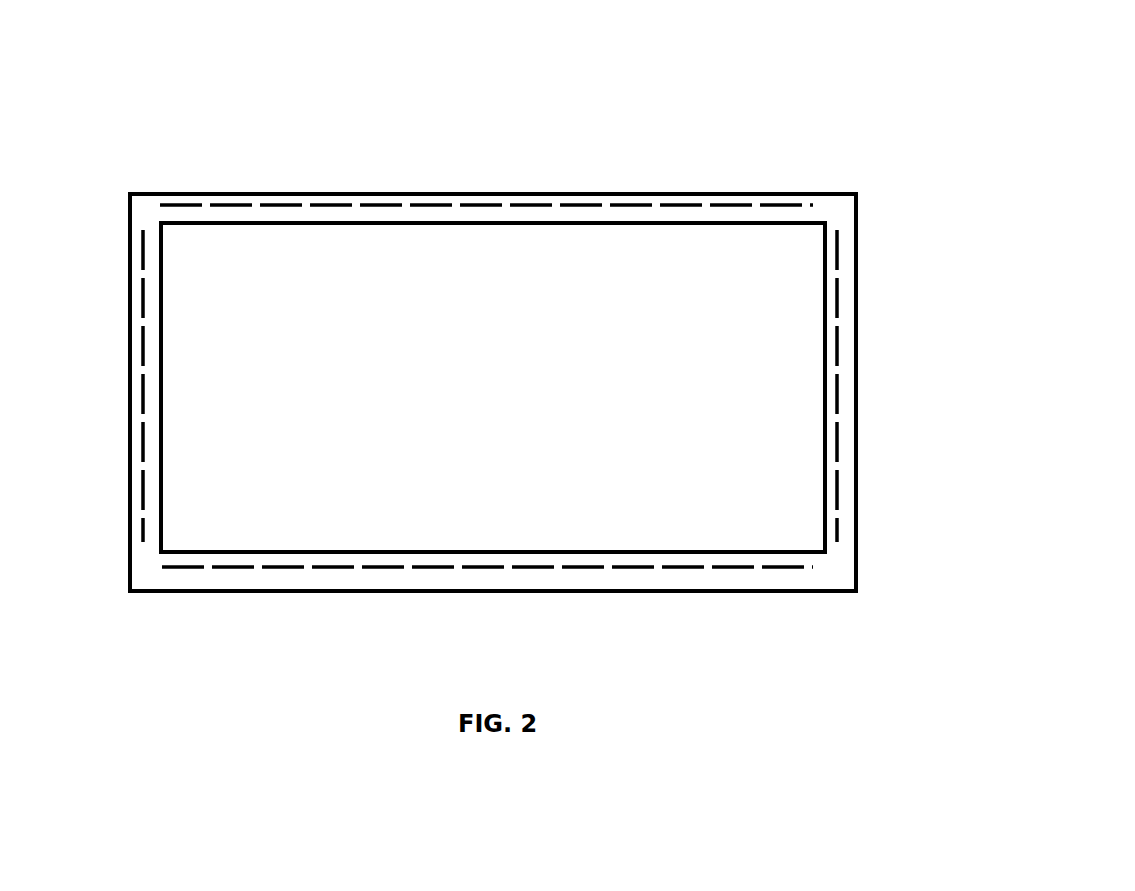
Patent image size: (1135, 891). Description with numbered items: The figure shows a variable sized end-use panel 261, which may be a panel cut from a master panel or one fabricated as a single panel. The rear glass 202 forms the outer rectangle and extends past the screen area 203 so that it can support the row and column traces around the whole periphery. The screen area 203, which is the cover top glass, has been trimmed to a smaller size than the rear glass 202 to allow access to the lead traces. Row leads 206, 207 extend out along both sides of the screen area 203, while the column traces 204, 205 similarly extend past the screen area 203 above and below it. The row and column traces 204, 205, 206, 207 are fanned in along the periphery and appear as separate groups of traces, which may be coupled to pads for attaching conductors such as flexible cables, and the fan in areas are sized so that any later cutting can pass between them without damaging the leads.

The variable sized end-use panel 261 is at (752, 114).
The rear glass 202 is at (470, 192).
The screen area 203 is at (583, 221).
The column traces 204 is at (335, 203).
The column traces 205 is at (292, 569).
The row leads 206 is at (143, 333).
The row leads 207 is at (838, 332).